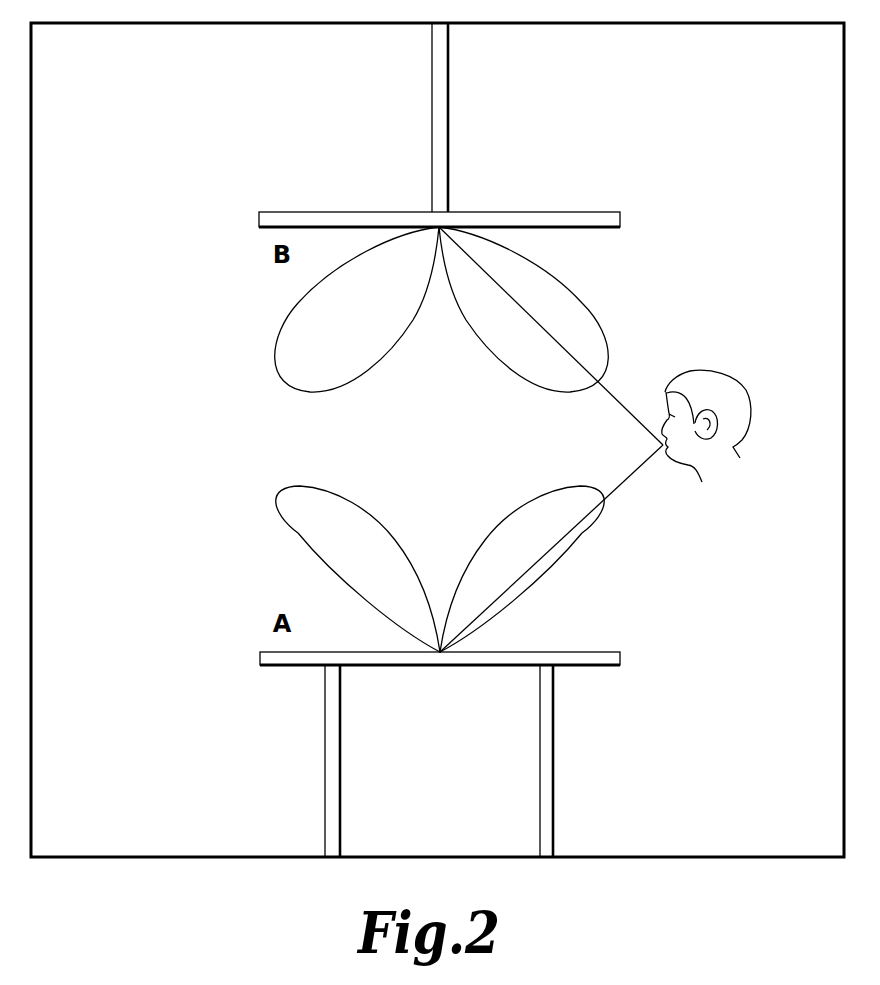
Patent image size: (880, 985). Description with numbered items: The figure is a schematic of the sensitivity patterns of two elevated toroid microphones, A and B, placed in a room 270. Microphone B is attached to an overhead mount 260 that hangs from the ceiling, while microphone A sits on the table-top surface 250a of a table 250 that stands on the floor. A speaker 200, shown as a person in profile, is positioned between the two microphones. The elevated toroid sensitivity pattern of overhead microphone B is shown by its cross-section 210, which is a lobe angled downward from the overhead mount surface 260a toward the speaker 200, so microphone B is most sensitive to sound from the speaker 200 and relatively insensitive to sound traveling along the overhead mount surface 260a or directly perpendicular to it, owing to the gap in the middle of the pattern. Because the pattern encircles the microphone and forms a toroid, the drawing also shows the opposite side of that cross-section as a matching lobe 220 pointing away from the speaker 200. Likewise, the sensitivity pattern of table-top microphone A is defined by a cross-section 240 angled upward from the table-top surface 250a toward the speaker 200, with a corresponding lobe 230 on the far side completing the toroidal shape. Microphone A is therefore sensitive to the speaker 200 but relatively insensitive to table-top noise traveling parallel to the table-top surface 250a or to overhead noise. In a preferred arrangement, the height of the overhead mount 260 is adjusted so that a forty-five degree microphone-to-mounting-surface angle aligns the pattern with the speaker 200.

The speaker 200 is at (750, 407).
The cross-section of elevated toroid sensitivity pattern 210 is at (609, 348).
The sound beam lobe from upper speaker away from listener 220 is at (272, 346).
The sound beam lobe from lower speaker away from listener 230 is at (272, 513).
The cross-section of sensitivity pattern 240 is at (607, 513).
The table 250 is at (572, 763).
The table-top surface 250a is at (615, 652).
The overhead mount 260 is at (473, 173).
The overhead mount surface 260a is at (592, 227).
The room 270 is at (117, 93).